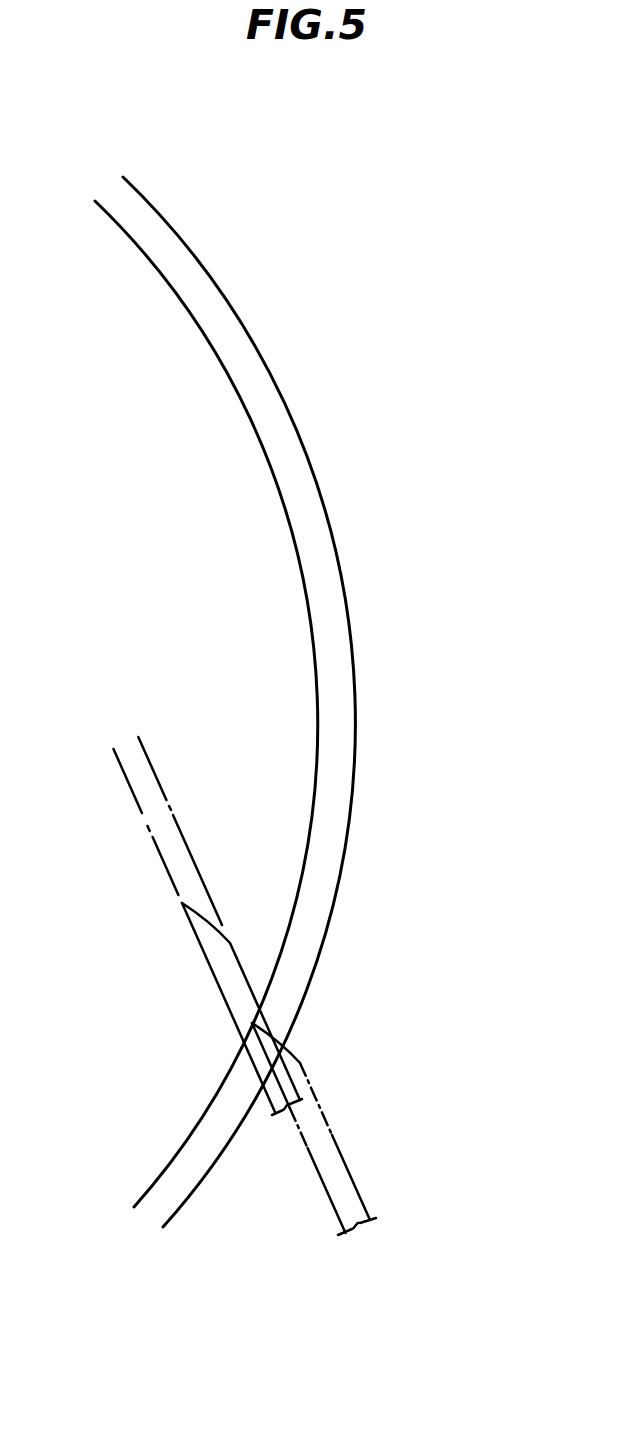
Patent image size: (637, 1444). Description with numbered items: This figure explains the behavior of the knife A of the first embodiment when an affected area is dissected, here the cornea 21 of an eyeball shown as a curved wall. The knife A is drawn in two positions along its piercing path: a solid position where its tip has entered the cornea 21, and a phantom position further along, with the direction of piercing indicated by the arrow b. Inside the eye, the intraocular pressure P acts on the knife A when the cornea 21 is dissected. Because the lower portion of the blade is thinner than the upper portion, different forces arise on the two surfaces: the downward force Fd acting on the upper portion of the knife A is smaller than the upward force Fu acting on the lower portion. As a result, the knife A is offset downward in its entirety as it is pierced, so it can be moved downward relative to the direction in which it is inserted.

The cornea 21 is at (348, 727).
The intraocular pressure P is at (166, 650).
The knife A is at (241, 1002).
The upward force Fu is at (185, 922).
The downward force Fd is at (278, 883).
The insertion direction b is at (367, 1255).